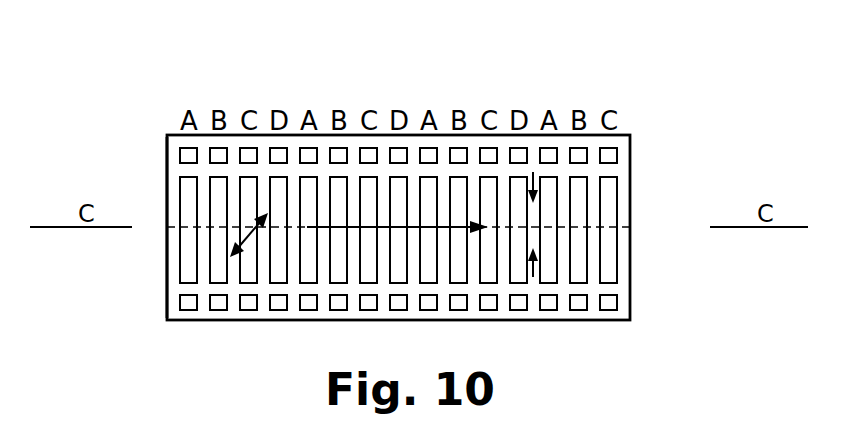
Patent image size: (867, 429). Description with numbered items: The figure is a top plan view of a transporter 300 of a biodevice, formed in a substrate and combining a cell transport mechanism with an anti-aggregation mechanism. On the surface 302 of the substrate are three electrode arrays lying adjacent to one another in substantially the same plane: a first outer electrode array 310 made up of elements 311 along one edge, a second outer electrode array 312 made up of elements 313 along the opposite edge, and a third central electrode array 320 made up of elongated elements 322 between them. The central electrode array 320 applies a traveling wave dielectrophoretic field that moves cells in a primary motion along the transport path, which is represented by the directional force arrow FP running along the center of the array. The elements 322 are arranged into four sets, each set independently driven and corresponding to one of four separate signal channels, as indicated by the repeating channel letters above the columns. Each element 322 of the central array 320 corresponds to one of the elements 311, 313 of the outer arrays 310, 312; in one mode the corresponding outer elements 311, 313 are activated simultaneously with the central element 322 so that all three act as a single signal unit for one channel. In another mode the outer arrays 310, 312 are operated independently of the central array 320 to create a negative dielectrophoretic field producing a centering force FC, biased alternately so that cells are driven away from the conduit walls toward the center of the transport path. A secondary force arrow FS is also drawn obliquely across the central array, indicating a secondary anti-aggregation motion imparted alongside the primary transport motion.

The transporter 300 is at (467, 67).
The surface 302 is at (167, 165).
The first outer electrode array 310 is at (632, 155).
The elements of first outer electrode array 311 is at (618, 150).
The second outer electrode array 312 is at (632, 307).
The elements of second outer electrode array 313 is at (616, 311).
The third central electrode array 320 is at (628, 200).
The elements of third central electrode array 322 is at (612, 274).
The primary motion directional force arrow FP is at (405, 228).
The shear force FS is at (251, 238).
The centering force FC is at (530, 338).